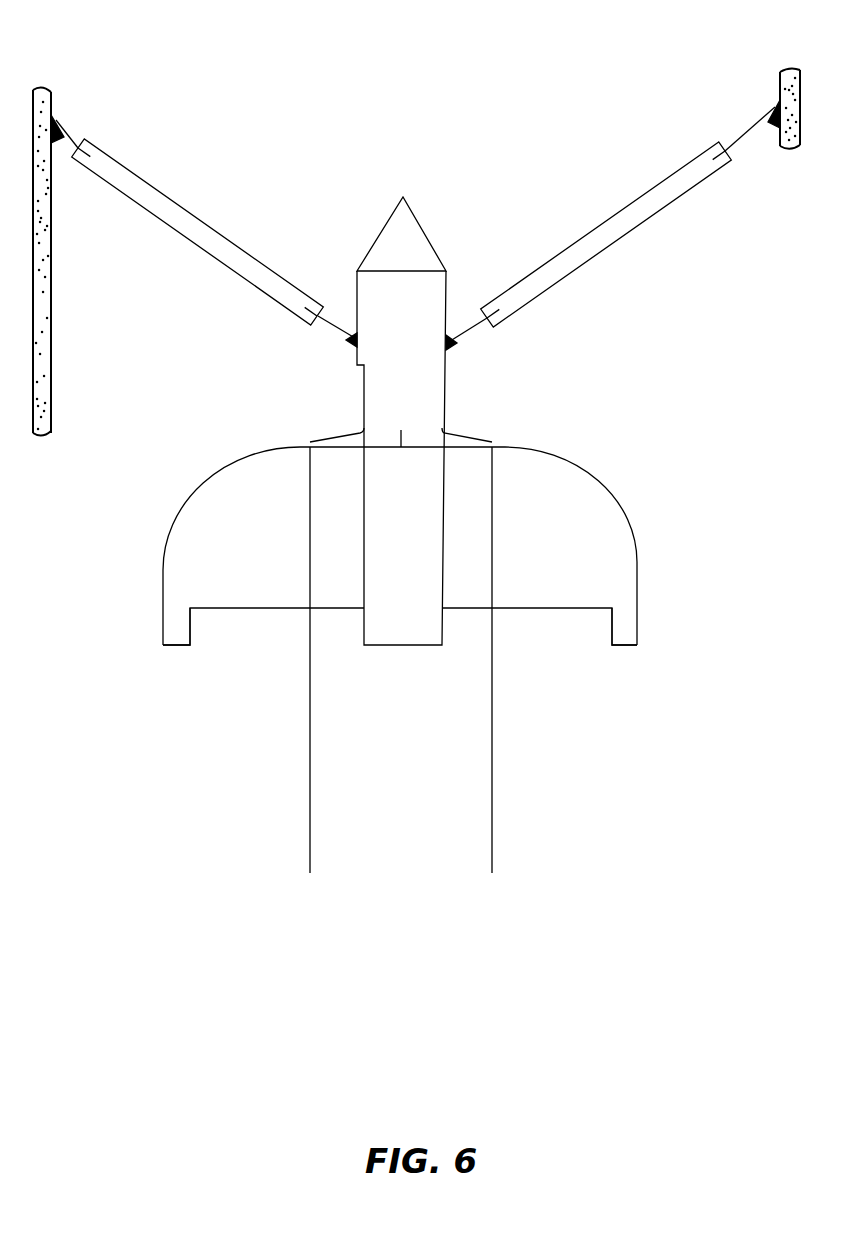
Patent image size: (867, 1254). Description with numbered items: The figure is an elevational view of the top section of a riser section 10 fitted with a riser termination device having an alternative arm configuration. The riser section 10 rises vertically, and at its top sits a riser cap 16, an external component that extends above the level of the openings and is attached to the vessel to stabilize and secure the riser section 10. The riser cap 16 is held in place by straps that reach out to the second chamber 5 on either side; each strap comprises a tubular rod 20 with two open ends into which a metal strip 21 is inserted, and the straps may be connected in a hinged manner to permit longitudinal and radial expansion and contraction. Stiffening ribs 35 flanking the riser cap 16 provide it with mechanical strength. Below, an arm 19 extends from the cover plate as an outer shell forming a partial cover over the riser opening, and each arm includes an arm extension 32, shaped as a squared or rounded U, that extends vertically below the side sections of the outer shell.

The second chamber 5 is at (43, 105).
The tubular rod 20 is at (148, 197).
The metal strip 21 is at (333, 327).
The riser cap 16 is at (428, 232).
The stiffening ribs 35 is at (347, 433).
The arm 19 is at (190, 493).
The arm extension 32 is at (175, 627).
The riser section 10 is at (438, 783).